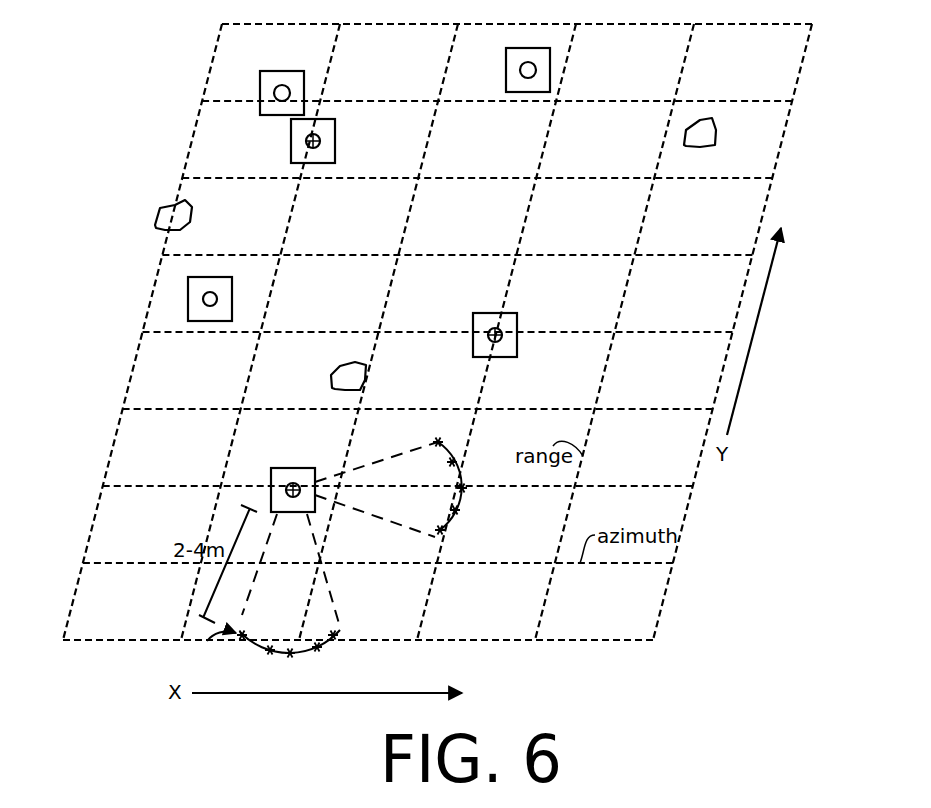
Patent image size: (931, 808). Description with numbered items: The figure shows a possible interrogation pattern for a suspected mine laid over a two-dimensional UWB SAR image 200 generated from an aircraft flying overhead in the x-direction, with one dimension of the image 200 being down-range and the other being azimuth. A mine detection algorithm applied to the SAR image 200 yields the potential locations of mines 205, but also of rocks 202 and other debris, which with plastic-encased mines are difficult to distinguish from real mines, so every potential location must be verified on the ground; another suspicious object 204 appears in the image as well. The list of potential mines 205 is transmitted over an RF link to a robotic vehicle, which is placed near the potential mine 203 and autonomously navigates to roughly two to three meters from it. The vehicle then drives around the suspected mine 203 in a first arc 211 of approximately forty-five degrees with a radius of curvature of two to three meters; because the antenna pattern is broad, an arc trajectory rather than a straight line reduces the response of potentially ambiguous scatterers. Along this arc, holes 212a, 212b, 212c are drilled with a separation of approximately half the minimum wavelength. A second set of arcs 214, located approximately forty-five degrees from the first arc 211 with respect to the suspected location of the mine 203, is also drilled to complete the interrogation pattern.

The SAR image 200 is at (597, 640).
The rocks 202 is at (198, 227).
The potential mine 203 is at (280, 468).
The object 204 is at (363, 372).
The mines 205 is at (260, 93).
The first arc 211 is at (356, 628).
The hole 212a is at (205, 651).
The hole 212b is at (277, 640).
The hole 212c is at (301, 661).
The second set of arcs 214 is at (464, 526).